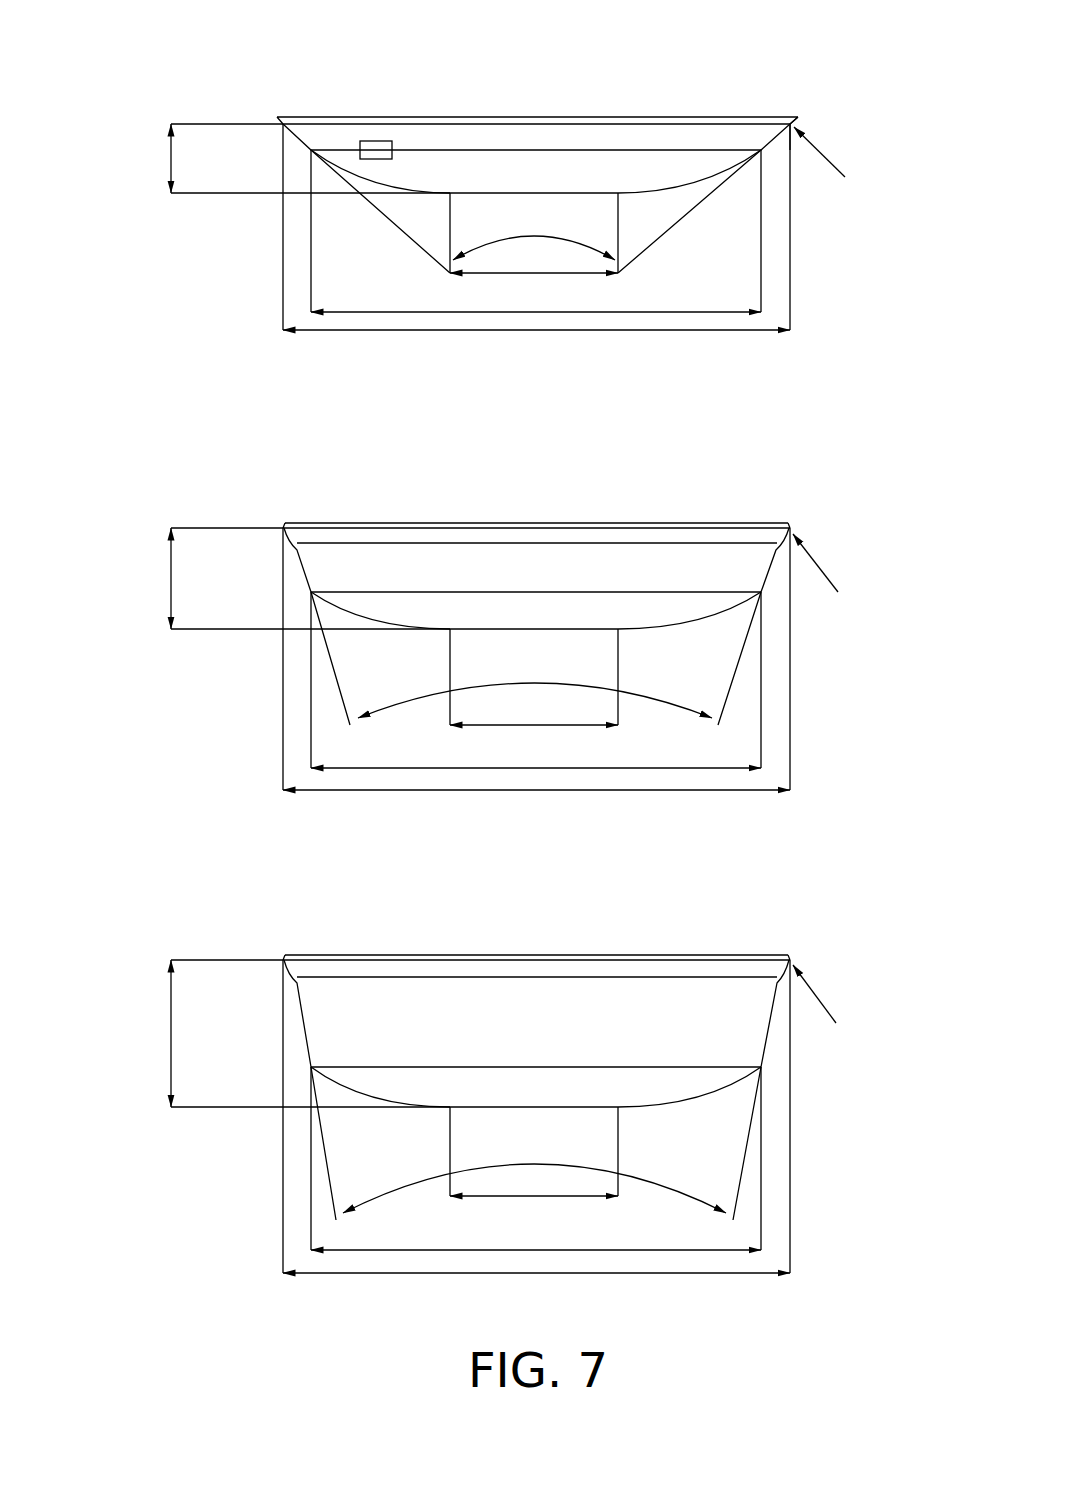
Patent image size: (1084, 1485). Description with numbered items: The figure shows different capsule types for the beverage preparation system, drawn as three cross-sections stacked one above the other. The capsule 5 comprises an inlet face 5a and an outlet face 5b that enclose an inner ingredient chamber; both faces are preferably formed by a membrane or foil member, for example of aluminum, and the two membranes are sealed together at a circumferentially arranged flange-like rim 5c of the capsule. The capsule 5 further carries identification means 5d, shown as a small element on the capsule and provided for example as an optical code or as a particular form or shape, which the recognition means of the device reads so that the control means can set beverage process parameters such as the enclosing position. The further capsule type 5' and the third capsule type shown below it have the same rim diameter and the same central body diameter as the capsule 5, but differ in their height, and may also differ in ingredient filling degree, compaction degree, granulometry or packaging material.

The capsule 5 is at (504, 188).
The inlet face 5a is at (437, 194).
The outlet face 5b is at (646, 100).
The flange-like rim 5c is at (799, 103).
The identification means 5d is at (371, 140).
The capsule type 5' is at (500, 632).